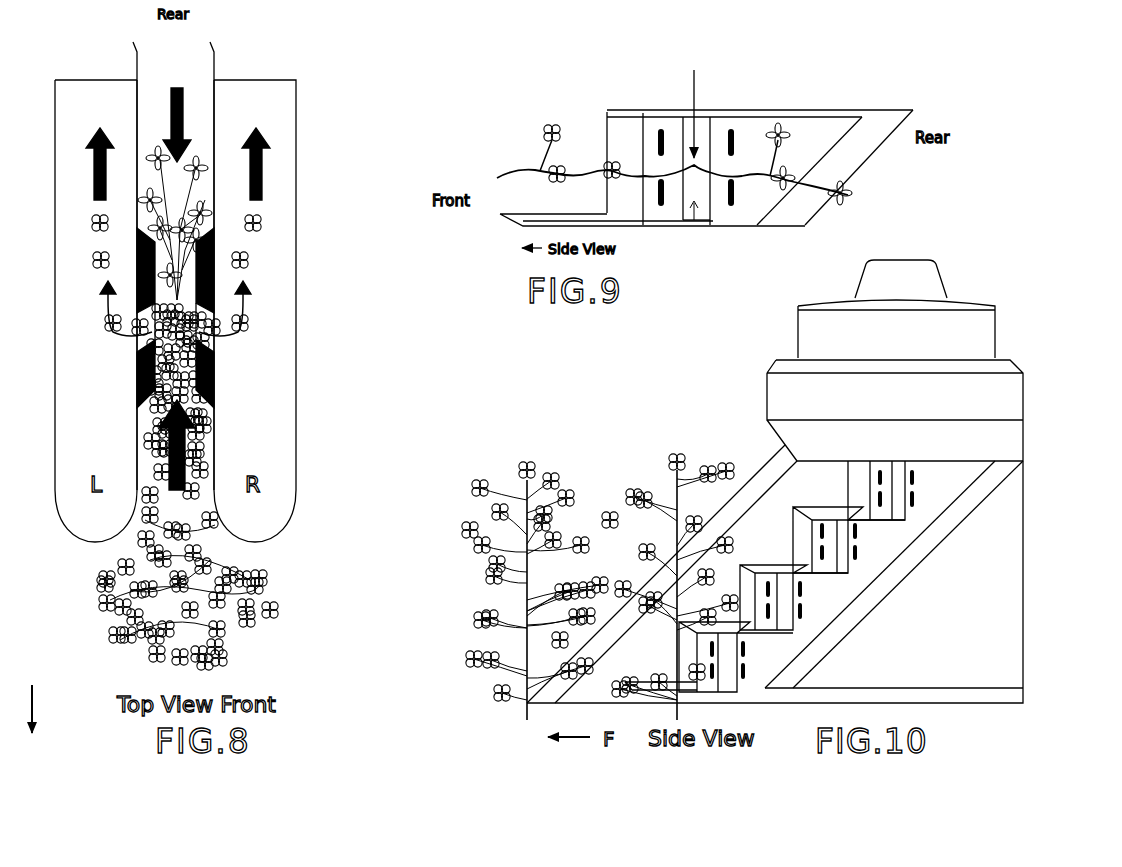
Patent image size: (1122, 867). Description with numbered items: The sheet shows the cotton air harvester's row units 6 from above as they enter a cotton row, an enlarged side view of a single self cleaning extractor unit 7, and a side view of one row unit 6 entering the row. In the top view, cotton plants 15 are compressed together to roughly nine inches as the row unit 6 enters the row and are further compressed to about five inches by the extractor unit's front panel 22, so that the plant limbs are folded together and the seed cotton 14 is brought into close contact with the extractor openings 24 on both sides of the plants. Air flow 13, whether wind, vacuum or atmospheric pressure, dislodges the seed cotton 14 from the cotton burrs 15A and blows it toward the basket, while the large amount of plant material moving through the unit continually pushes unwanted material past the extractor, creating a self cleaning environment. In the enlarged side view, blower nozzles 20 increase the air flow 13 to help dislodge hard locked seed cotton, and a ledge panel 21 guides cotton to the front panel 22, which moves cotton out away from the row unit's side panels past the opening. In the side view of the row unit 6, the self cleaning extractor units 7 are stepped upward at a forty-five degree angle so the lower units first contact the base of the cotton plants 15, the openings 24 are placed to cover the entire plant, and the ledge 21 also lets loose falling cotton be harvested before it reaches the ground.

In FIG. 8, the row unit 6 is at (75, 541).
In FIG. 10, the row unit 6 is at (1035, 650).
In FIG. 8, the self cleaning extractor unit 7 is at (175, 252).
In FIG. 9, the self cleaning extractor unit 7 is at (873, 100).
In FIG. 10, the self cleaning extractor unit 7 is at (948, 488).
In FIG. 8, the air flow 13 is at (315, 318).
In FIG. 9, the air flow 13 is at (698, 125).
In FIG. 8, the seed cotton 14 is at (91, 258).
In FIG. 9, the seed cotton 14 is at (538, 132).
In FIG. 10, the seed cotton 14 is at (500, 492).
In FIG. 8, the cotton plant 15 is at (221, 641).
In FIG. 9, the cotton plant 15 is at (516, 174).
In FIG. 10, the cotton plant 15 is at (496, 665).
In FIG. 8, the cotton burr 15A is at (200, 158).
In FIG. 9, the cotton burr 15A is at (858, 193).
In FIG. 9, the blower nozzle 20 is at (656, 133).
In FIG. 9, the ledge panel 21 is at (523, 226).
In FIG. 10, the ledge panel 21 is at (777, 560).
In FIG. 8, the front panel 22 is at (142, 411).
In FIG. 9, the front panel 22 is at (620, 136).
In FIG. 10, the front panel 22 is at (857, 487).
In FIG. 8, the extractor opening 24 is at (131, 347).
In FIG. 9, the extractor opening 24 is at (697, 205).
In FIG. 10, the extractor opening 24 is at (740, 654).